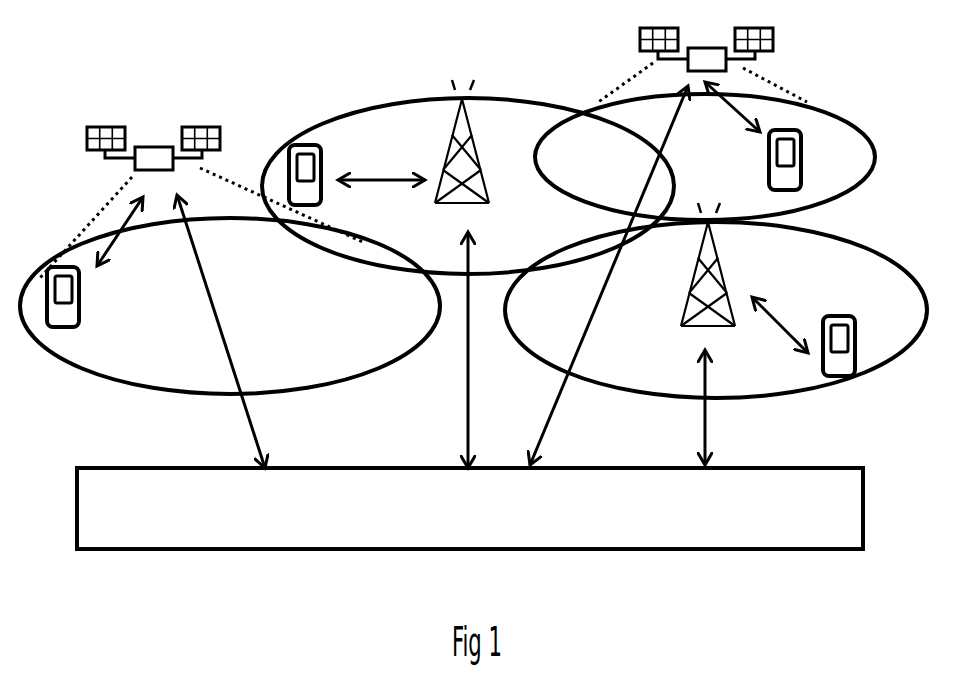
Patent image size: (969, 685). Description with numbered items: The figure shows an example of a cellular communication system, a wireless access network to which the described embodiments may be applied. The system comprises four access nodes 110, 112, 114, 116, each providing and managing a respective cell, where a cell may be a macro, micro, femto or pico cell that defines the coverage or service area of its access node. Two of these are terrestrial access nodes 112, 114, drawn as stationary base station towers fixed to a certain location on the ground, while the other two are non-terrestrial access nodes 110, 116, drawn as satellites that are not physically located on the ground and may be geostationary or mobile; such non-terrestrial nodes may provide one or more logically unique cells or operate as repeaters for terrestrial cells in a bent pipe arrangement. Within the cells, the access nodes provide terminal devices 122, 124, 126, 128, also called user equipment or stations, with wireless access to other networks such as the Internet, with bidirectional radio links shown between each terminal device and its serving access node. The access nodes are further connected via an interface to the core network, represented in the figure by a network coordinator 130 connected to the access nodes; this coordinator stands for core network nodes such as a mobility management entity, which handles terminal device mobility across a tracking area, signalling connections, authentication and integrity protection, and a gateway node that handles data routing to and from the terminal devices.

The non-terrestrial access node 110 is at (182, 138).
The terrestrial access node 112 is at (452, 135).
The terrestrial access node 114 is at (700, 258).
The non-terrestrial access node 116 is at (640, 43).
The terminal device 122 is at (63, 267).
The terminal device 124 is at (306, 145).
The terminal device 126 is at (785, 130).
The terminal device 128 is at (840, 316).
The network coordinator 130 is at (470, 508).